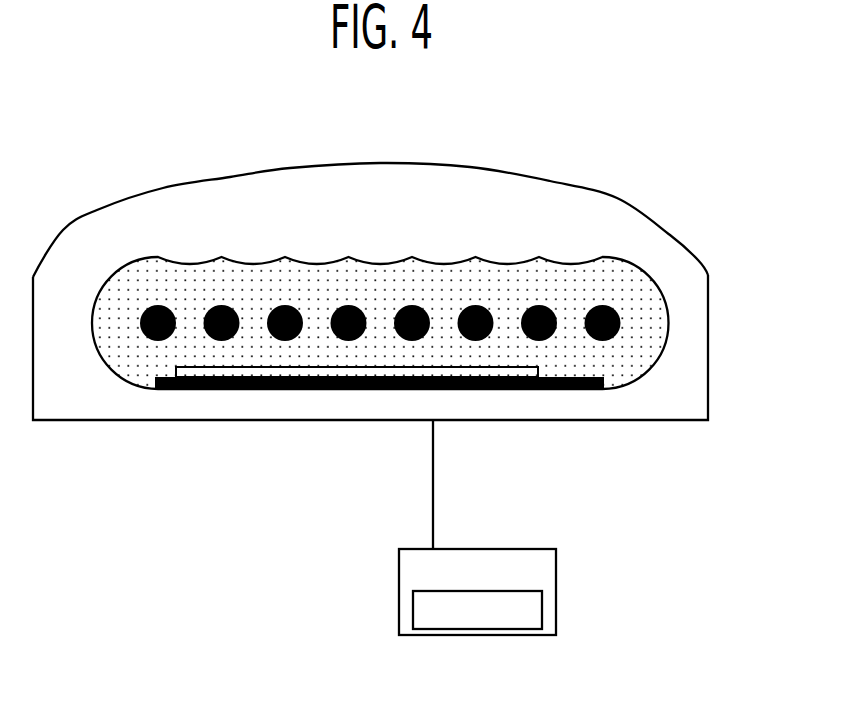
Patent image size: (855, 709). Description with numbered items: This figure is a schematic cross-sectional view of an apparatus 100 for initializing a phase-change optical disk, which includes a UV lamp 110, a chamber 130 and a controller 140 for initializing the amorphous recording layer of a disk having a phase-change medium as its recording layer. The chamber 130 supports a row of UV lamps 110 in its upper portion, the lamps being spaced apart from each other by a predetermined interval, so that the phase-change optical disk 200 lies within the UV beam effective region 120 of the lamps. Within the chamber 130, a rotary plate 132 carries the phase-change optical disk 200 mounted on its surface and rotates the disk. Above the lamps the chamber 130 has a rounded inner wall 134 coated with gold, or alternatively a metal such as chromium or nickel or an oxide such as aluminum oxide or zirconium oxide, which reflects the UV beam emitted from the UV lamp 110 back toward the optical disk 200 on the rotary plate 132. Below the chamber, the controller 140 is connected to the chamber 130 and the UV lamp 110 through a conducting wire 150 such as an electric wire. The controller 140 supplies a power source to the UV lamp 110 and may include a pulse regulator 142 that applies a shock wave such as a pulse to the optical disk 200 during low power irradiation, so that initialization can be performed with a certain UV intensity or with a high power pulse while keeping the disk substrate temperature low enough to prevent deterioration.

The apparatus for initializing a phase-change optical disk 100 is at (104, 110).
The UV lamp 110 is at (621, 320).
The UV beam effective region 120 is at (640, 357).
The chamber 130 is at (702, 397).
The rotary plate 132 is at (597, 388).
The rounded inner wall 134 is at (629, 193).
The controller 140 is at (556, 558).
The pulse regulator 142 is at (542, 611).
The conducting wire 150 is at (433, 510).
The phase-change optical disk 200 is at (535, 370).